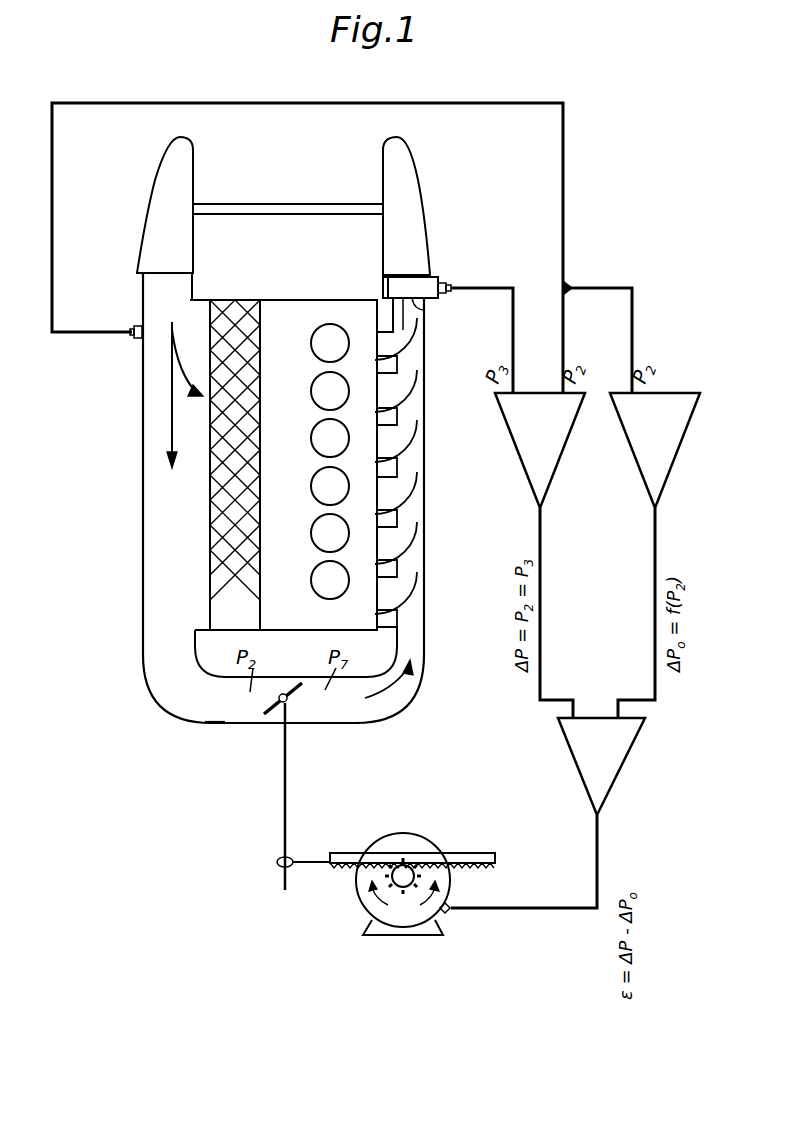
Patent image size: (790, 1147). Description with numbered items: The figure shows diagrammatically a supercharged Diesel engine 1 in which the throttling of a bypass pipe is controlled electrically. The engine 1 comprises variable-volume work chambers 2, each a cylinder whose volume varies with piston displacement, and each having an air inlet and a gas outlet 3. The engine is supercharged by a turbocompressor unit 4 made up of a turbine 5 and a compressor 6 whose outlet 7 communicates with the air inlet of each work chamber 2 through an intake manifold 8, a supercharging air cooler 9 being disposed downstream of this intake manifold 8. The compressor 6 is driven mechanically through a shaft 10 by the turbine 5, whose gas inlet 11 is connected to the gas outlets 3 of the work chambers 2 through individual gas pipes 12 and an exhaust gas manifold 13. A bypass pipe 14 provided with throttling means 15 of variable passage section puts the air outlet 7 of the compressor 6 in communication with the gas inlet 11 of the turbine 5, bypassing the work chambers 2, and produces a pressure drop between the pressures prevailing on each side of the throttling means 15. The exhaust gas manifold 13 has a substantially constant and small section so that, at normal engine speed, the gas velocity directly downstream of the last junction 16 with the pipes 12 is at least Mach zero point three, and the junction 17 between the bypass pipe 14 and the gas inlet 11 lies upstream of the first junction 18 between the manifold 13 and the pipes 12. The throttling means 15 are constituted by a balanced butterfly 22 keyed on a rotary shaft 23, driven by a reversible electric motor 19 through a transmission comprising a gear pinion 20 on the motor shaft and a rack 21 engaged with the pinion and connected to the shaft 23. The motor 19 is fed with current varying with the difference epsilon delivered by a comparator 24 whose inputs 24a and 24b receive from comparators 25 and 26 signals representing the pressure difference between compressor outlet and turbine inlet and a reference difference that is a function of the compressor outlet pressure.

The supercharged Diesel engine 1 is at (130, 552).
The variable-volume work chambers 2 is at (310, 380).
The gas outlet 3 is at (377, 386).
The turbocompressor unit 4 is at (284, 198).
The turbine 5 is at (412, 200).
The compressor 6 is at (148, 200).
The compressor outlet 7 is at (160, 270).
The intake manifold 8 is at (143, 490).
The supercharging air cooler 9 is at (252, 476).
The shaft 10 is at (305, 215).
The turbine gas inlet 11 is at (422, 308).
The individual gas pipes 12 is at (400, 442).
The exhaust gas manifold 13 is at (418, 546).
The bypass pipe 14 is at (222, 708).
The throttling means 15 is at (300, 697).
The last junction 16 is at (402, 316).
The junction between bypass pipe and turbine inlet 17 is at (409, 613).
The first junction 18 is at (412, 566).
The reversible electric motor 19 is at (424, 846).
The gear pinion 20 is at (392, 878).
The rack 21 is at (346, 853).
The balanced butterfly 22 is at (276, 716).
The rotary shaft 23 is at (283, 690).
The comparator 24 is at (592, 765).
The comparator input 24a is at (560, 720).
The comparator input 24b is at (630, 722).
The comparator 25 is at (517, 452).
The comparator 26 is at (642, 455).